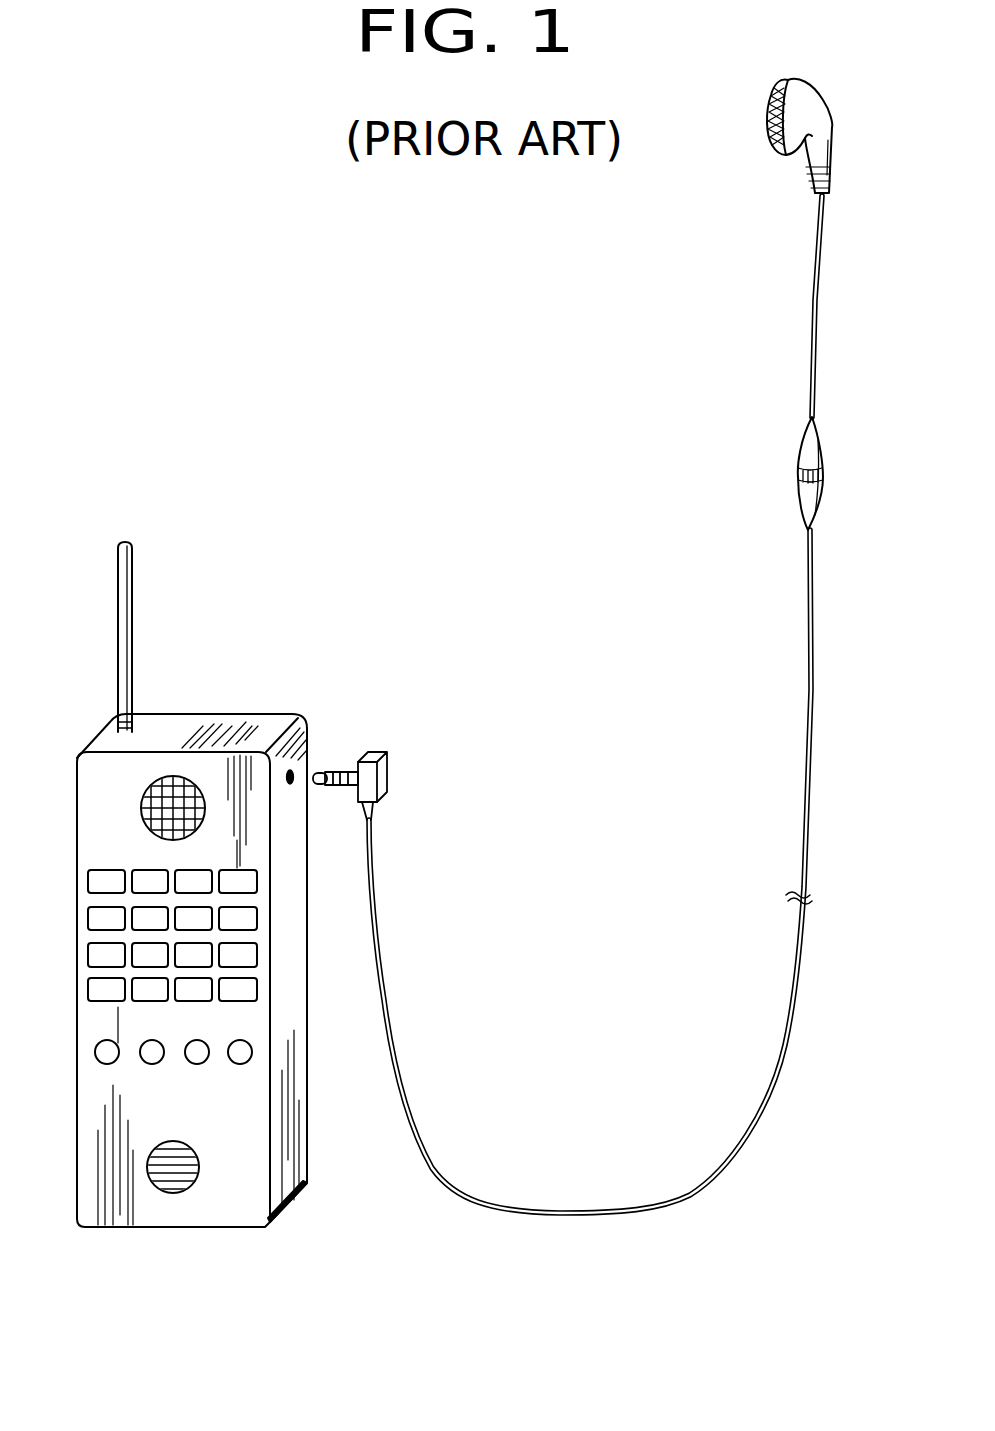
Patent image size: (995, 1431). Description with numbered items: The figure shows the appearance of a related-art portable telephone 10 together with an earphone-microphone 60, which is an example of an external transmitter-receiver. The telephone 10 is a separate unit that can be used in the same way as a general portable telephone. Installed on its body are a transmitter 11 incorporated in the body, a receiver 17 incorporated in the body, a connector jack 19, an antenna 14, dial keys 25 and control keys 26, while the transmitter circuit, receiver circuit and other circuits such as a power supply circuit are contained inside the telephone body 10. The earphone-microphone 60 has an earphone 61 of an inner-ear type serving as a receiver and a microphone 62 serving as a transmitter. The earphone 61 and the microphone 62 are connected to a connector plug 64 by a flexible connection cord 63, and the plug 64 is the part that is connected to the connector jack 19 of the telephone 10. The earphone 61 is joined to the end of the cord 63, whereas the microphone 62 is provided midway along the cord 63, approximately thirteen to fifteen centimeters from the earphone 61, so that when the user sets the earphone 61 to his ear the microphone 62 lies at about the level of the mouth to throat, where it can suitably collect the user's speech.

The portable telephone 10 is at (287, 1207).
The transmitter 11 is at (175, 1183).
The antenna 14 is at (132, 638).
The receiver 17 is at (150, 810).
The connector jack 19 is at (293, 783).
The dial keys 25 is at (250, 953).
The control keys 26 is at (242, 1052).
The earphone-microphone 60 is at (637, 288).
The earphone 61 is at (768, 157).
The microphone 62 is at (798, 457).
The connection cord 63 is at (807, 380).
The connector plug 64 is at (383, 780).